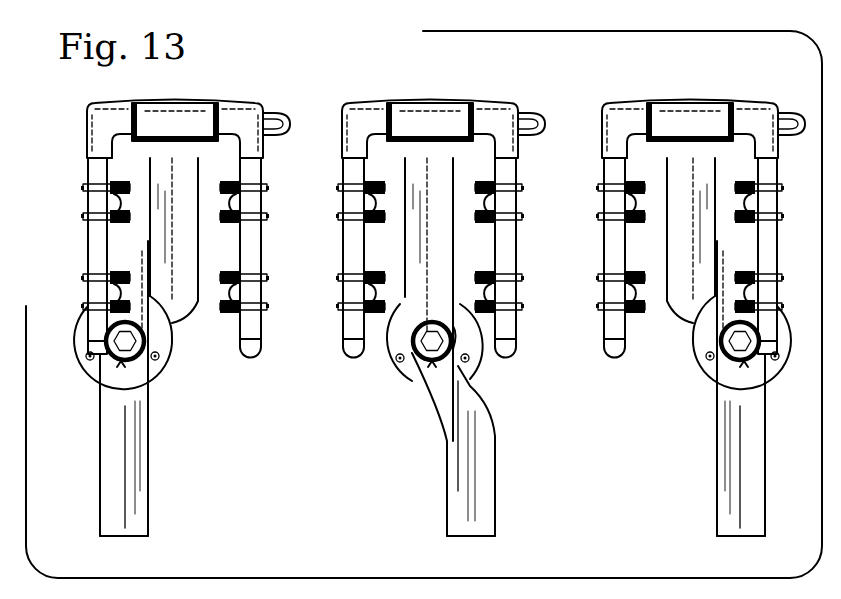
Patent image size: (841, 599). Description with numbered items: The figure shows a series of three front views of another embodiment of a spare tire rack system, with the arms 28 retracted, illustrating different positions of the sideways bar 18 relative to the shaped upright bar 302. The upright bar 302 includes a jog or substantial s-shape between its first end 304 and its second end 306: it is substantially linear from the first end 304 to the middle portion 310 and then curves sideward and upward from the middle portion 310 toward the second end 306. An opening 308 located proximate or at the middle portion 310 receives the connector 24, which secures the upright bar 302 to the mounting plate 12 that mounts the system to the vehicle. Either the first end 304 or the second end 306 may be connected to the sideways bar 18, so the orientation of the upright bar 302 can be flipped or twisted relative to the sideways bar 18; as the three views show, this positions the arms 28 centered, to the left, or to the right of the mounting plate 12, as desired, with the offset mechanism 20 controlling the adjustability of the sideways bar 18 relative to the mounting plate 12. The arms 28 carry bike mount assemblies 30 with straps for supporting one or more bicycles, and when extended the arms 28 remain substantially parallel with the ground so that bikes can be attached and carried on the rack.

The mounting plate 12 is at (163, 342).
The sideways bar 18 is at (185, 118).
The offset mechanism 20 is at (166, 463).
The connector 24 is at (126, 344).
The arms 28 is at (90, 262).
The bike mount assemblies 30 is at (138, 201).
The upright bar 302 is at (130, 526).
The first end 304 is at (130, 537).
The second end 306 is at (180, 143).
The opening 308 is at (120, 370).
The middle portion 310 is at (148, 333).